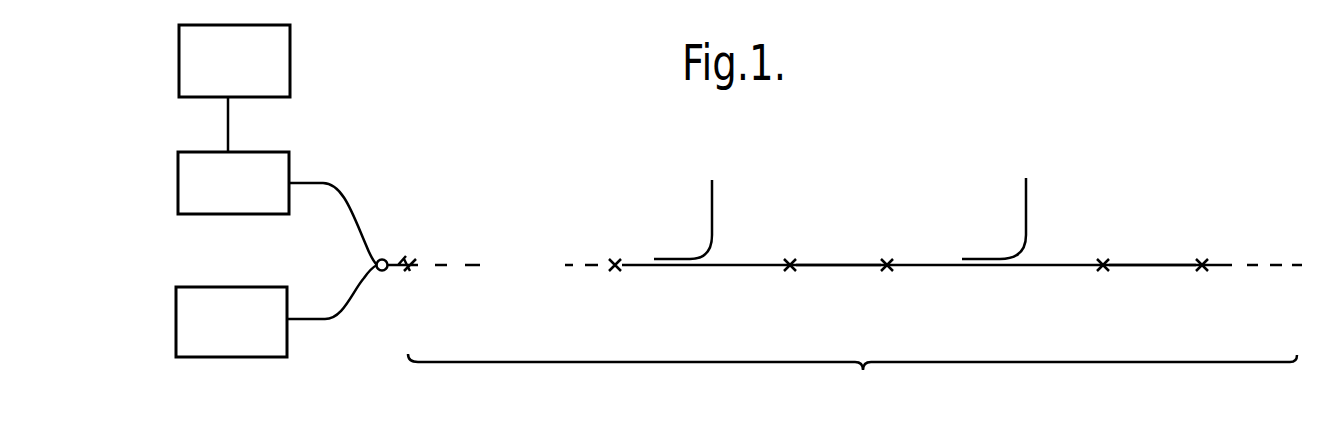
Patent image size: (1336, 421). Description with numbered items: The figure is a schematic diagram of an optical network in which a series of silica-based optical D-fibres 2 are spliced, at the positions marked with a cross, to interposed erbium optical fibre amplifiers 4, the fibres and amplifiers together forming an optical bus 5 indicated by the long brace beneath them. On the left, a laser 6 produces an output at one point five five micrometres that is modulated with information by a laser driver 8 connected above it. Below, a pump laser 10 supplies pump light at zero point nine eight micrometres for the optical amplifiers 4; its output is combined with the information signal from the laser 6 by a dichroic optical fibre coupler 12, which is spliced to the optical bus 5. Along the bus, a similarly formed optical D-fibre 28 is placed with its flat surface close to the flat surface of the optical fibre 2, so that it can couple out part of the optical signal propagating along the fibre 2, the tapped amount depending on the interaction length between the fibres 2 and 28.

The optical D-fibre 2 is at (736, 268).
The erbium optical fibre amplifier 4 is at (837, 267).
The optical bus 5 is at (852, 379).
The laser 6 is at (178, 186).
The laser driver 8 is at (179, 58).
The pump laser 10 is at (176, 319).
The dichroic optical fibre coupler 12 is at (384, 271).
The optical D-fibre 28 is at (676, 259).